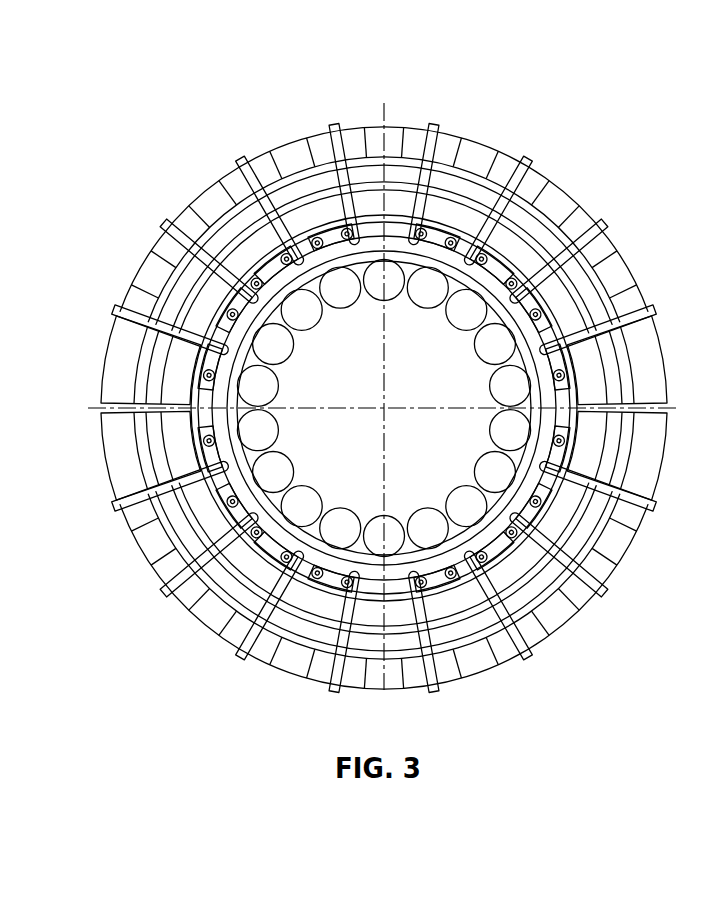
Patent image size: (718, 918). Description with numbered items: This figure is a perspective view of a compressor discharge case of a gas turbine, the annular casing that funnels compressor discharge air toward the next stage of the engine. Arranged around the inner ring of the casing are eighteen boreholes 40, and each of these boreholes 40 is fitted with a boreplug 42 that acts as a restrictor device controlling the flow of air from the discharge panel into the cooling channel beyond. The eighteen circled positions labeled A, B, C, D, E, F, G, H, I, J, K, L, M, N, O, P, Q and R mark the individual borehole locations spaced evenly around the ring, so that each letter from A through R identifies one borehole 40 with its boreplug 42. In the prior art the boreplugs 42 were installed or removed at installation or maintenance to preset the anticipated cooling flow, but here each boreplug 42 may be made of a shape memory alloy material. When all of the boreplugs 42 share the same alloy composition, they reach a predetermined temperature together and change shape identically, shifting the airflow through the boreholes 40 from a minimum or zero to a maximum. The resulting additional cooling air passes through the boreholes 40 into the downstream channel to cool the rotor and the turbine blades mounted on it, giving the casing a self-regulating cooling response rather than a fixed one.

The borehole 40 is at (495, 255).
The boreplug 42 is at (230, 297).
The position A is at (510, 385).
The position B is at (494, 344).
The position C is at (466, 309).
The position D is at (427, 287).
The position E is at (384, 280).
The position F is at (340, 287).
The position G is at (301, 309).
The position H is at (273, 344).
The position I is at (257, 385).
The position J is at (257, 430).
The position K is at (273, 472).
The position L is at (301, 506).
The position M is at (340, 528).
The position N is at (384, 536).
The position O is at (427, 528).
The position P is at (466, 506).
The position Q is at (494, 472).
The position R is at (510, 430).